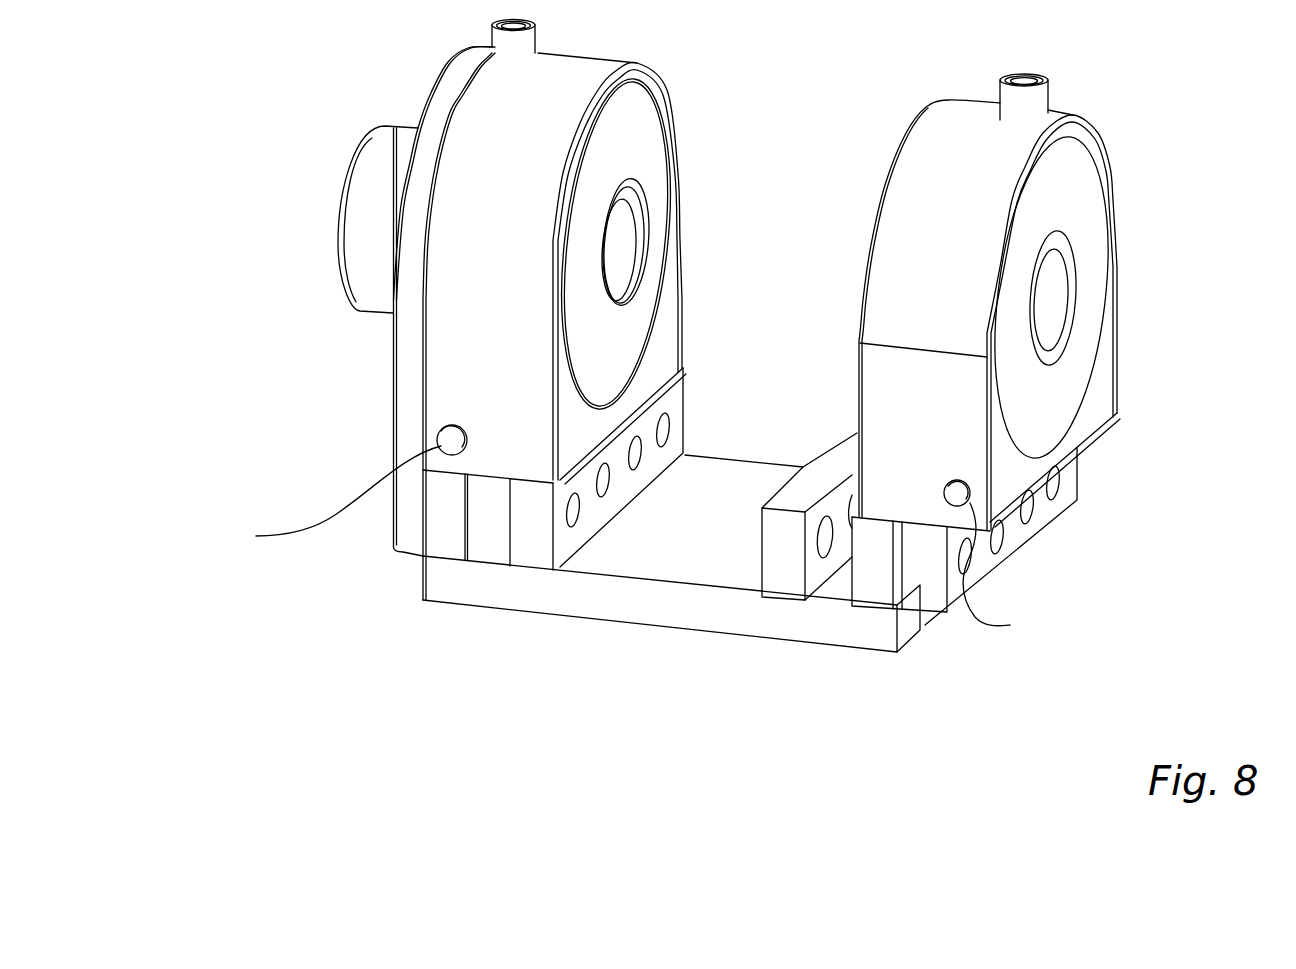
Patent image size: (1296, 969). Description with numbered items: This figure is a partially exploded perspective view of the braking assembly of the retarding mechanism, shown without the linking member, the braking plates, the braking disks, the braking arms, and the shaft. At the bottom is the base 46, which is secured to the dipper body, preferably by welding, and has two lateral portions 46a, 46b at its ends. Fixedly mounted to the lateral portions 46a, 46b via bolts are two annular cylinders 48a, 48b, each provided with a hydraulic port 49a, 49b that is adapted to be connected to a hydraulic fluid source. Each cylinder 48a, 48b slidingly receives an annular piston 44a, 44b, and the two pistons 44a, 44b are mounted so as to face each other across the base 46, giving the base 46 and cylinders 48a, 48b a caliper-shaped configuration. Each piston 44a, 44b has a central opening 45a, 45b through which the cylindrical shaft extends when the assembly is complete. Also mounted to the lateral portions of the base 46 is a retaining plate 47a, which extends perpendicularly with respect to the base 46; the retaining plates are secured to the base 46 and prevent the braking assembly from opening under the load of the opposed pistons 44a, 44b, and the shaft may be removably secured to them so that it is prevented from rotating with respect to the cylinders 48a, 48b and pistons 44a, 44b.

The annular piston 44a is at (597, 330).
The annular piston 44b is at (860, 298).
The opening 45a is at (613, 260).
The opening 45b is at (1052, 298).
The base 46 is at (663, 625).
The lateral portion of the base 46a is at (443, 558).
The lateral portion of the base 46b is at (873, 607).
The retaining plate 47a is at (397, 530).
The annular cylinder 48a is at (497, 203).
The annular cylinder 48b is at (940, 218).
The hydraulic port 49a is at (310, 499).
The hydraulic port 49b is at (1020, 576).